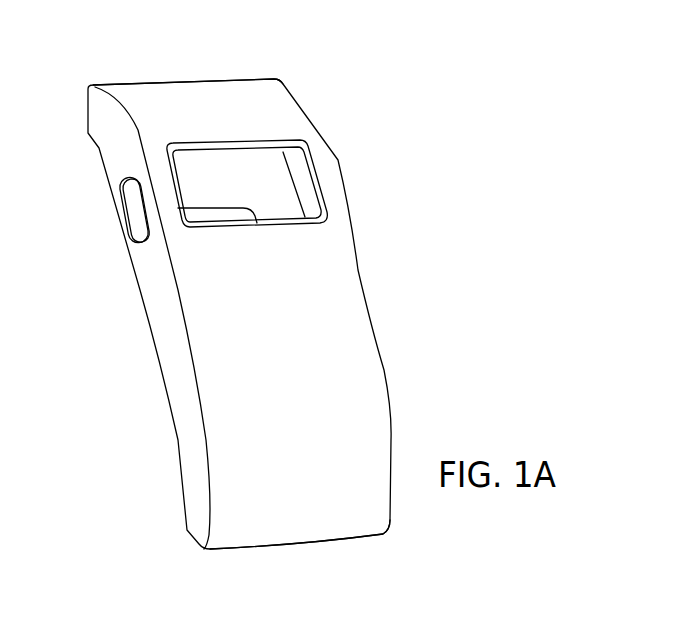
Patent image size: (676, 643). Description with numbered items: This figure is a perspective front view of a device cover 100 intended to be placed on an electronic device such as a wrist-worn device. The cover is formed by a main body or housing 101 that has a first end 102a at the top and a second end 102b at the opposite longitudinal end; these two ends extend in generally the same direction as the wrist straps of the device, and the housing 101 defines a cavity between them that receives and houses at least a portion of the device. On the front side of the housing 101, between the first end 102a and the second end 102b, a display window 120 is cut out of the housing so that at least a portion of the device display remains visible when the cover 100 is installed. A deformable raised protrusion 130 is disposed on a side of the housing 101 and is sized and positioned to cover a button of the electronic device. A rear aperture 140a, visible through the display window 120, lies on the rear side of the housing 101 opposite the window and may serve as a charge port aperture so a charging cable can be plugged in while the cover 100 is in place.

The device cover 100 is at (372, 66).
The housing 101 is at (243, 119).
The first end 102a is at (293, 78).
The second end 102b is at (396, 534).
The display window 120 is at (320, 172).
The raised protrusion 130 is at (128, 203).
The rear aperture 140a is at (262, 216).